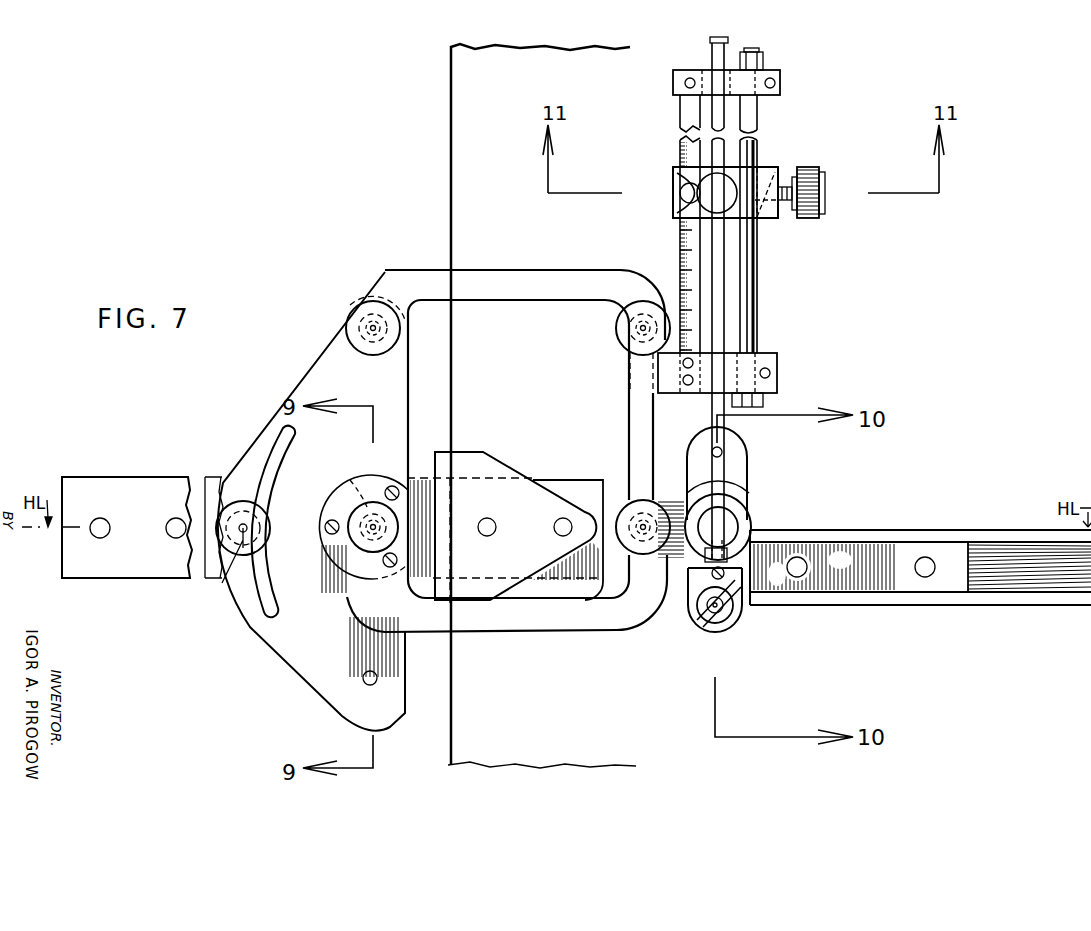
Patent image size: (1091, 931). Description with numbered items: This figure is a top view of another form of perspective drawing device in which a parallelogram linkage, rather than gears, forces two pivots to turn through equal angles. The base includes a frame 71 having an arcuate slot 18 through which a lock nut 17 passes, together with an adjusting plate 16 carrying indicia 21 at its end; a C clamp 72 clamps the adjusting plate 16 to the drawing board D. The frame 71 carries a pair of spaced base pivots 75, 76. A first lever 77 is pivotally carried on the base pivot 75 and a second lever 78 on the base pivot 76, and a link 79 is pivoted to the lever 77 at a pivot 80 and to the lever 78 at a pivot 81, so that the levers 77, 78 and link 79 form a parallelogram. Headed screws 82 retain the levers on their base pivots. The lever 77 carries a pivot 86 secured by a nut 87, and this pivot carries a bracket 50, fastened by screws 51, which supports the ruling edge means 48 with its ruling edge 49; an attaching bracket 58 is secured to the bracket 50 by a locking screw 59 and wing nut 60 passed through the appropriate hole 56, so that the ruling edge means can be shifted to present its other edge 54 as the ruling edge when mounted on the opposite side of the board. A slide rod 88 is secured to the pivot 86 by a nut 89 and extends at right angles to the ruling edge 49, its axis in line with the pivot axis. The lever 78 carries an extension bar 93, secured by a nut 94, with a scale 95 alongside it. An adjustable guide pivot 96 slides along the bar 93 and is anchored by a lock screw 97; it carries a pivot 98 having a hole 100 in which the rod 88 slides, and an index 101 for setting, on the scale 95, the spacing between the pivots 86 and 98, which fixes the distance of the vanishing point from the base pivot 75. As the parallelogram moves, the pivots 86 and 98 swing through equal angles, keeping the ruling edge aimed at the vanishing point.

The adjusting plate 16 is at (140, 495).
The lock nut 17 is at (228, 573).
The arcuate slot 18 is at (256, 615).
The indicia 21 is at (597, 522).
The ruling edge means 48 is at (1045, 585).
The ruling edge 49 is at (949, 530).
The bracket 50 is at (702, 598).
The screws 51 is at (708, 573).
The other edge 54 is at (975, 605).
The hole 56 is at (722, 452).
The attaching bracket 58 is at (895, 588).
The locking screw 59 is at (735, 612).
The wing nut 60 is at (720, 620).
The frame 71 is at (303, 657).
The C clamp 72 is at (475, 465).
The base pivot 75 is at (349, 486).
The base pivot 76 is at (347, 332).
The first lever 77 is at (605, 617).
The lever 78 is at (540, 288).
The link 79 is at (641, 411).
The pivot 80 is at (630, 516).
The pivot 81 is at (616, 330).
The headed screws 82 is at (368, 312).
The pivot 86 is at (728, 520).
The nut 87 is at (693, 515).
The rod 88 is at (720, 326).
The nut 89 is at (750, 528).
The bar 93 is at (745, 278).
The nut 94 is at (765, 402).
The scale 95 is at (683, 240).
The adjustable guide pivot 96 is at (770, 166).
The lock screw 97 is at (823, 190).
The pivot 98 is at (688, 170).
The hole 100 is at (762, 216).
The index 101 is at (678, 198).
The drawing board D is at (451, 205).